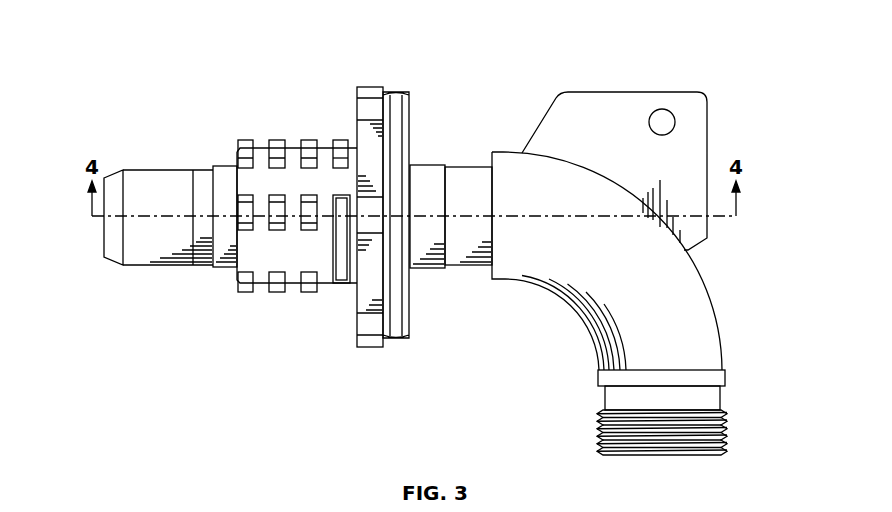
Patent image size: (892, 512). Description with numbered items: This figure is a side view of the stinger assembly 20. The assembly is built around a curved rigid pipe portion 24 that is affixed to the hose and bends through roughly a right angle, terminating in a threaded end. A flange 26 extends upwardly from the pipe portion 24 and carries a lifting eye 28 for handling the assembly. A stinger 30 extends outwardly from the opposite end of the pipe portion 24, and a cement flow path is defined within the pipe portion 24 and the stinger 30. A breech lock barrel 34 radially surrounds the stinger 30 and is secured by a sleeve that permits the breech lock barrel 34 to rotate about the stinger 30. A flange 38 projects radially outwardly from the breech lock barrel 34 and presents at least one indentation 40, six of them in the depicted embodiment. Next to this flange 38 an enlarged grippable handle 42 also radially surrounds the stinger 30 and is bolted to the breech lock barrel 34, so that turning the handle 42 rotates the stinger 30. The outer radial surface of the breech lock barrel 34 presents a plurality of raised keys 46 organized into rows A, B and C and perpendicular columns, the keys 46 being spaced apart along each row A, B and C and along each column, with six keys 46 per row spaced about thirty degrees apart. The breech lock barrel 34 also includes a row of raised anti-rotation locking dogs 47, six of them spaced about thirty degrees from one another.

The stinger assembly 20 is at (174, 29).
The curved rigid pipe portion 24 is at (707, 337).
The flange 26 is at (580, 101).
The lifting eye 28 is at (662, 110).
The stinger 30 is at (158, 168).
The breech lock barrel 34 is at (298, 285).
The flange 38 is at (368, 125).
The indentation 40 is at (378, 230).
The enlarged grippable handle 42 is at (393, 91).
The raised keys 46 is at (245, 141).
The anti-rotation locking dogs 47 is at (343, 141).
The row A is at (244, 291).
The row B is at (275, 292).
The row C is at (305, 292).